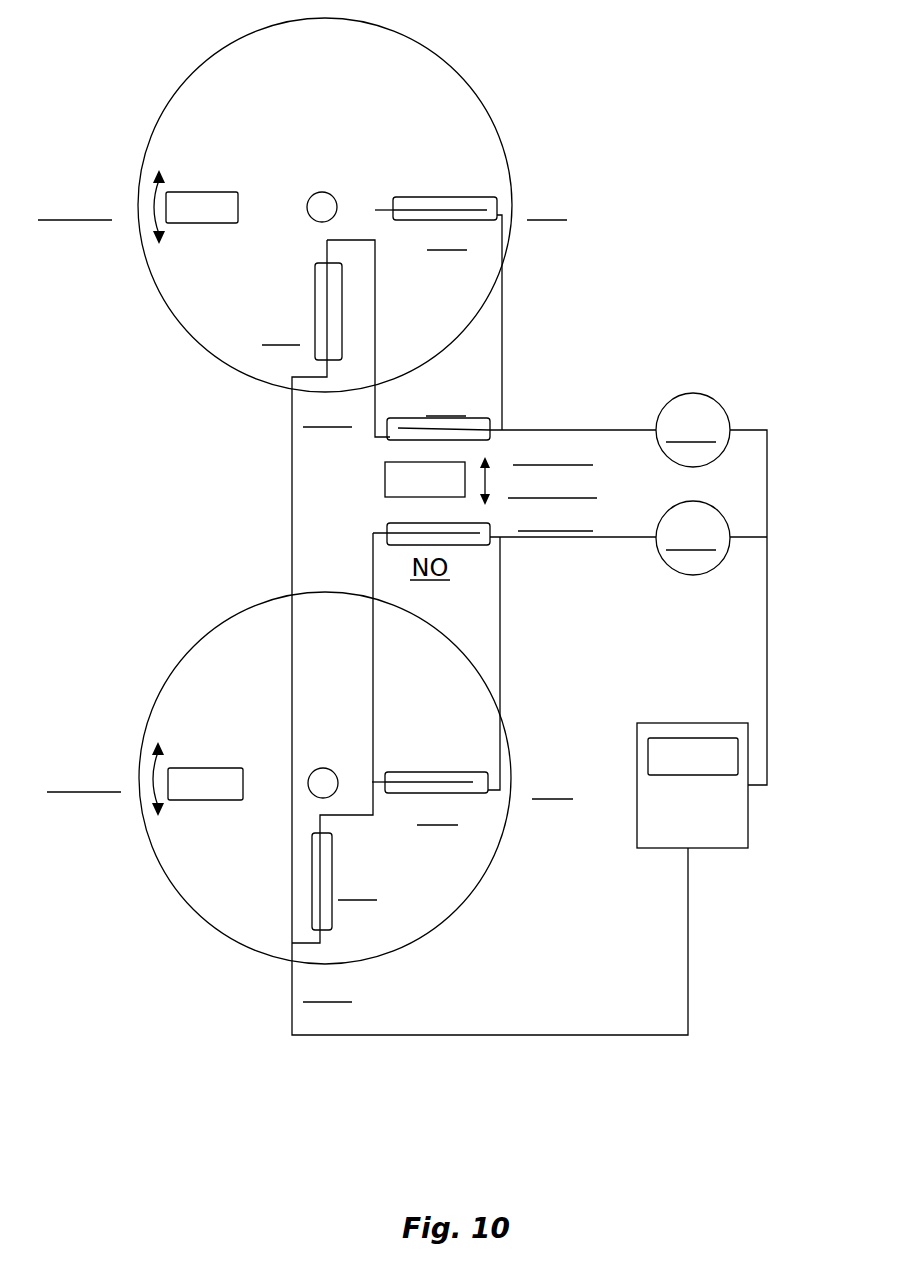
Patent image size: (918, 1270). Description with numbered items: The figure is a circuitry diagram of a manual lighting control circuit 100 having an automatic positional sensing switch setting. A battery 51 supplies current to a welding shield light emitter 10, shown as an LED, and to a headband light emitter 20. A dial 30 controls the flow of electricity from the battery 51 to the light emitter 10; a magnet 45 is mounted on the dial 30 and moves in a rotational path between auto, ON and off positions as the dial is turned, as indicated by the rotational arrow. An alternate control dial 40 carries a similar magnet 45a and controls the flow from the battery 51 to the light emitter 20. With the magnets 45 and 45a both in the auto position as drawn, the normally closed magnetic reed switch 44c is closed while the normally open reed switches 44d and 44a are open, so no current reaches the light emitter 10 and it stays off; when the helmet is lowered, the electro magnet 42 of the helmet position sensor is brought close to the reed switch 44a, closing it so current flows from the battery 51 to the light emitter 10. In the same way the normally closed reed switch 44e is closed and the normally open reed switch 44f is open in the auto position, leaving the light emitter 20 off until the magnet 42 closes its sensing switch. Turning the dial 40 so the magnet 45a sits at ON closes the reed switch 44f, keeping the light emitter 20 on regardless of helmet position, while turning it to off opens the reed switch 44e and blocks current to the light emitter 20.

The manual lighting control circuit 100 is at (618, 232).
The welding shield light emitter 10 is at (693, 393).
The headband light emitter 20 is at (693, 575).
The dial 30 is at (482, 112).
The dial 40 is at (190, 648).
The electro magnet 42 is at (385, 473).
The normally open magnetic reed switch 44a is at (467, 418).
The normally closed magnetic reed switch 44c is at (315, 300).
The normally open magnetic reed switch 44d is at (450, 197).
The normally closed magnetic reed switch 44e is at (332, 923).
The normally open magnetic reed switch 44f is at (455, 772).
The magnet 45 is at (195, 192).
The magnet 45a is at (180, 768).
The battery 51 is at (637, 773).